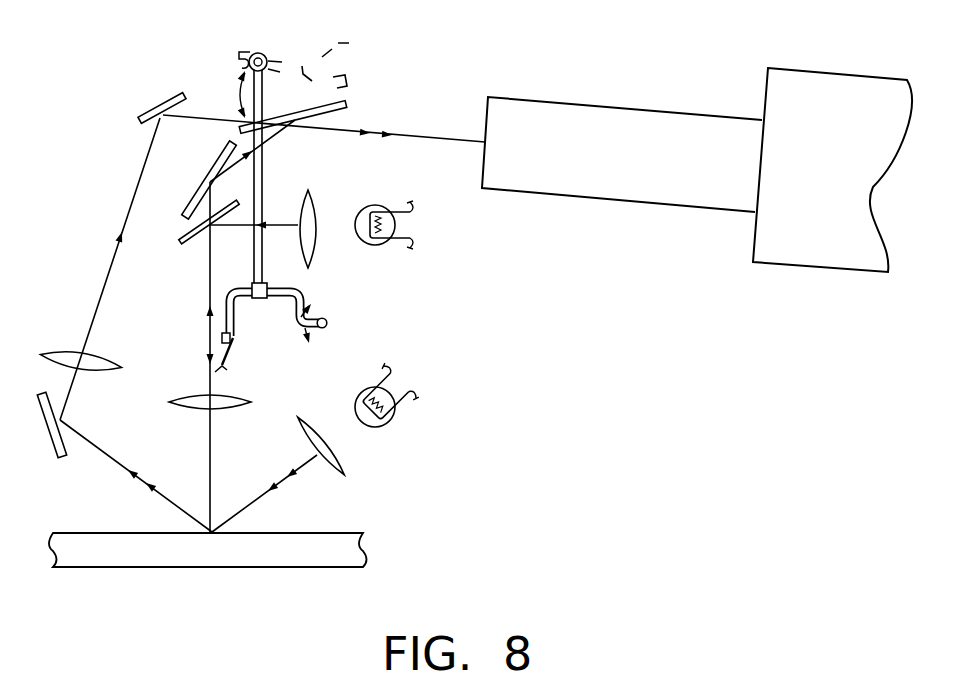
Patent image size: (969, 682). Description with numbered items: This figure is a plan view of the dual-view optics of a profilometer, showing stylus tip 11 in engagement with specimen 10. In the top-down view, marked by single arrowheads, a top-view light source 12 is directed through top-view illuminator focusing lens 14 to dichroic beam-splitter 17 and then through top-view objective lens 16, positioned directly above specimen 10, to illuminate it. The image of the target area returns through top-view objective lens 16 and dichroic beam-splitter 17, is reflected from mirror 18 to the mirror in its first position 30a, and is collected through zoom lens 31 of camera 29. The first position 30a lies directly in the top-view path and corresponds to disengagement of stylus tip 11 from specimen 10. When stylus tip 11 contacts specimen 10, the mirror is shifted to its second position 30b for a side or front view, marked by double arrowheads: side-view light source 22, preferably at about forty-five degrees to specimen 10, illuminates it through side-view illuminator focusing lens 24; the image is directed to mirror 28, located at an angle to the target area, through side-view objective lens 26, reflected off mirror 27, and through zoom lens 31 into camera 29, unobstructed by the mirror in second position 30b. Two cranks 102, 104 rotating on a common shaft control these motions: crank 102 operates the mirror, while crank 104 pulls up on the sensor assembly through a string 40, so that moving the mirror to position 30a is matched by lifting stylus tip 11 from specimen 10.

The specimen 10 is at (268, 560).
The stylus tip 11 is at (208, 527).
The top-view light source 12 is at (375, 246).
The top-view illuminator focusing lens 14 is at (311, 193).
The top-view objective lens 16 is at (220, 409).
The dichroic beam-splitter 17 is at (195, 242).
The mirror 18 is at (203, 182).
The side-view light source 22 is at (387, 428).
The side-view illuminator focusing lens 24 is at (334, 470).
The side-view objective lens 26 is at (53, 352).
The mirror 27 is at (143, 111).
The mirror 28 is at (50, 458).
The camera 29 is at (833, 87).
The first position of mirror 30 30a is at (347, 105).
The second position of mirror 30 30b is at (351, 59).
The zoom lens 31 is at (628, 122).
The string 40 is at (226, 364).
The crank 102 is at (295, 291).
The crank 104 is at (242, 333).